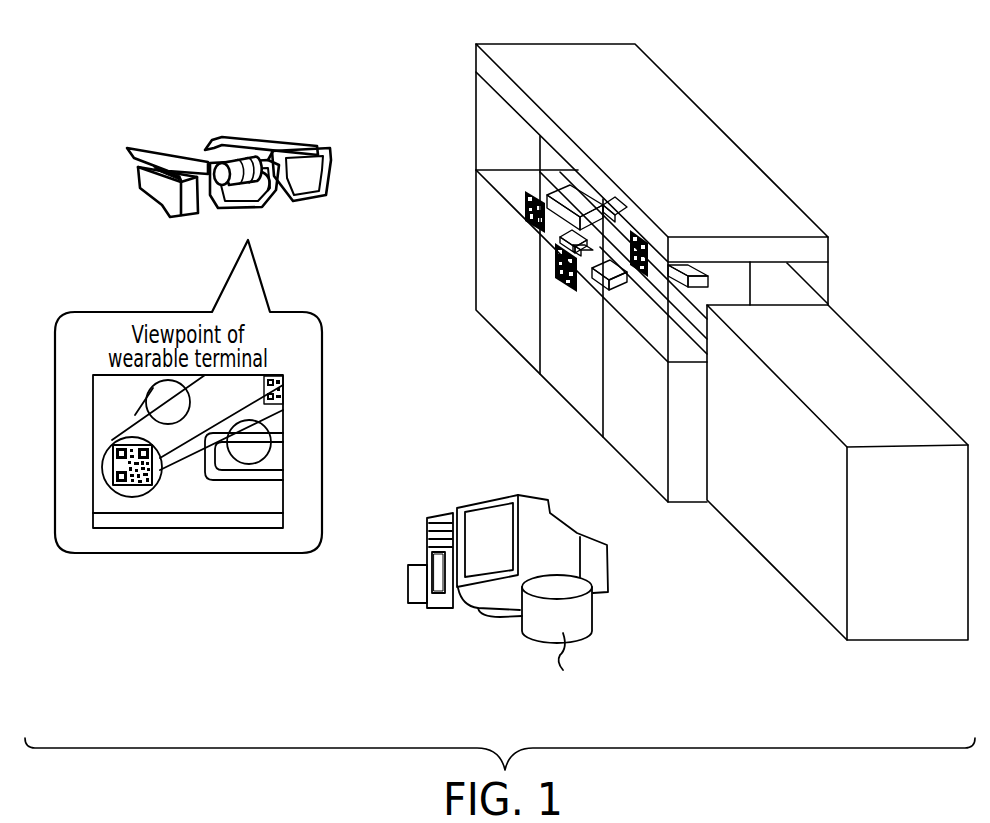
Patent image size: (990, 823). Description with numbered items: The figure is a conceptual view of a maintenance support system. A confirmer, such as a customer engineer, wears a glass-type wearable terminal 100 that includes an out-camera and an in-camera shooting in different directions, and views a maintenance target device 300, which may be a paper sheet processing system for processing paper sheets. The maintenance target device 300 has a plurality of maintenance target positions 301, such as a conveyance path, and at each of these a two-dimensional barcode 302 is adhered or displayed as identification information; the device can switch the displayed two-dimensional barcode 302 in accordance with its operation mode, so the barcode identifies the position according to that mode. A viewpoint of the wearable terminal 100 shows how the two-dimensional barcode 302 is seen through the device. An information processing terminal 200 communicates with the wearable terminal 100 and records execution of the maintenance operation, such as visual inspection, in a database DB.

The wearable terminal 100 is at (293, 143).
The information processing terminal 200 is at (492, 502).
The maintenance target device 300 is at (689, 93).
The maintenance target position 301 is at (554, 183).
The two-dimensional barcode 302 is at (130, 488).